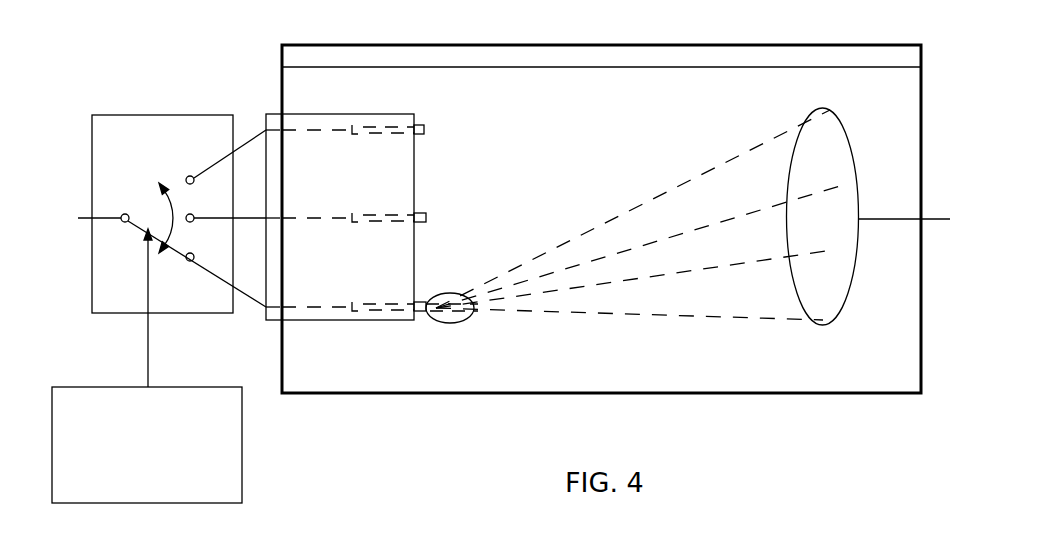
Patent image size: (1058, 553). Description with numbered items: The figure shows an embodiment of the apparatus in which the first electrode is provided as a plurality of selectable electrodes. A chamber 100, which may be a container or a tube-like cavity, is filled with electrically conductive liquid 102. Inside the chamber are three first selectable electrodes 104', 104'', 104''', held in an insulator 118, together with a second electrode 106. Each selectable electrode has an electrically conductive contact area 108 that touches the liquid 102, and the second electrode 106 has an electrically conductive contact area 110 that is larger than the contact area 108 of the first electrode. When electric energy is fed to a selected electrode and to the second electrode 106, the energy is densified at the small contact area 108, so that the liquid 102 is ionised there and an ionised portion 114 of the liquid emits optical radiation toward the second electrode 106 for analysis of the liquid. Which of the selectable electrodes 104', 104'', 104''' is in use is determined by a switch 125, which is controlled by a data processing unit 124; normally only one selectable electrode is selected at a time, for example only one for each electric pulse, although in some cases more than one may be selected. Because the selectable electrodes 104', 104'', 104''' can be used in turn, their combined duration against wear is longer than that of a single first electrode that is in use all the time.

The chamber 100 is at (588, 45).
The electrically conductive liquid 102 is at (624, 148).
The first selectable electrode 104' is at (383, 286).
The second selectable electrode 104'' is at (384, 197).
The third selectable electrode 104''' is at (392, 110).
The second electrode 106 is at (812, 112).
The electrically conductive contact area of the first electrode 108 is at (421, 124).
The electrically conductive contact area of the second electrode 110 is at (848, 296).
The ionised portion of the liquid 114 is at (445, 323).
The insulator 118 is at (293, 114).
The data processing unit 124 is at (72, 387).
The switch 125 is at (140, 115).